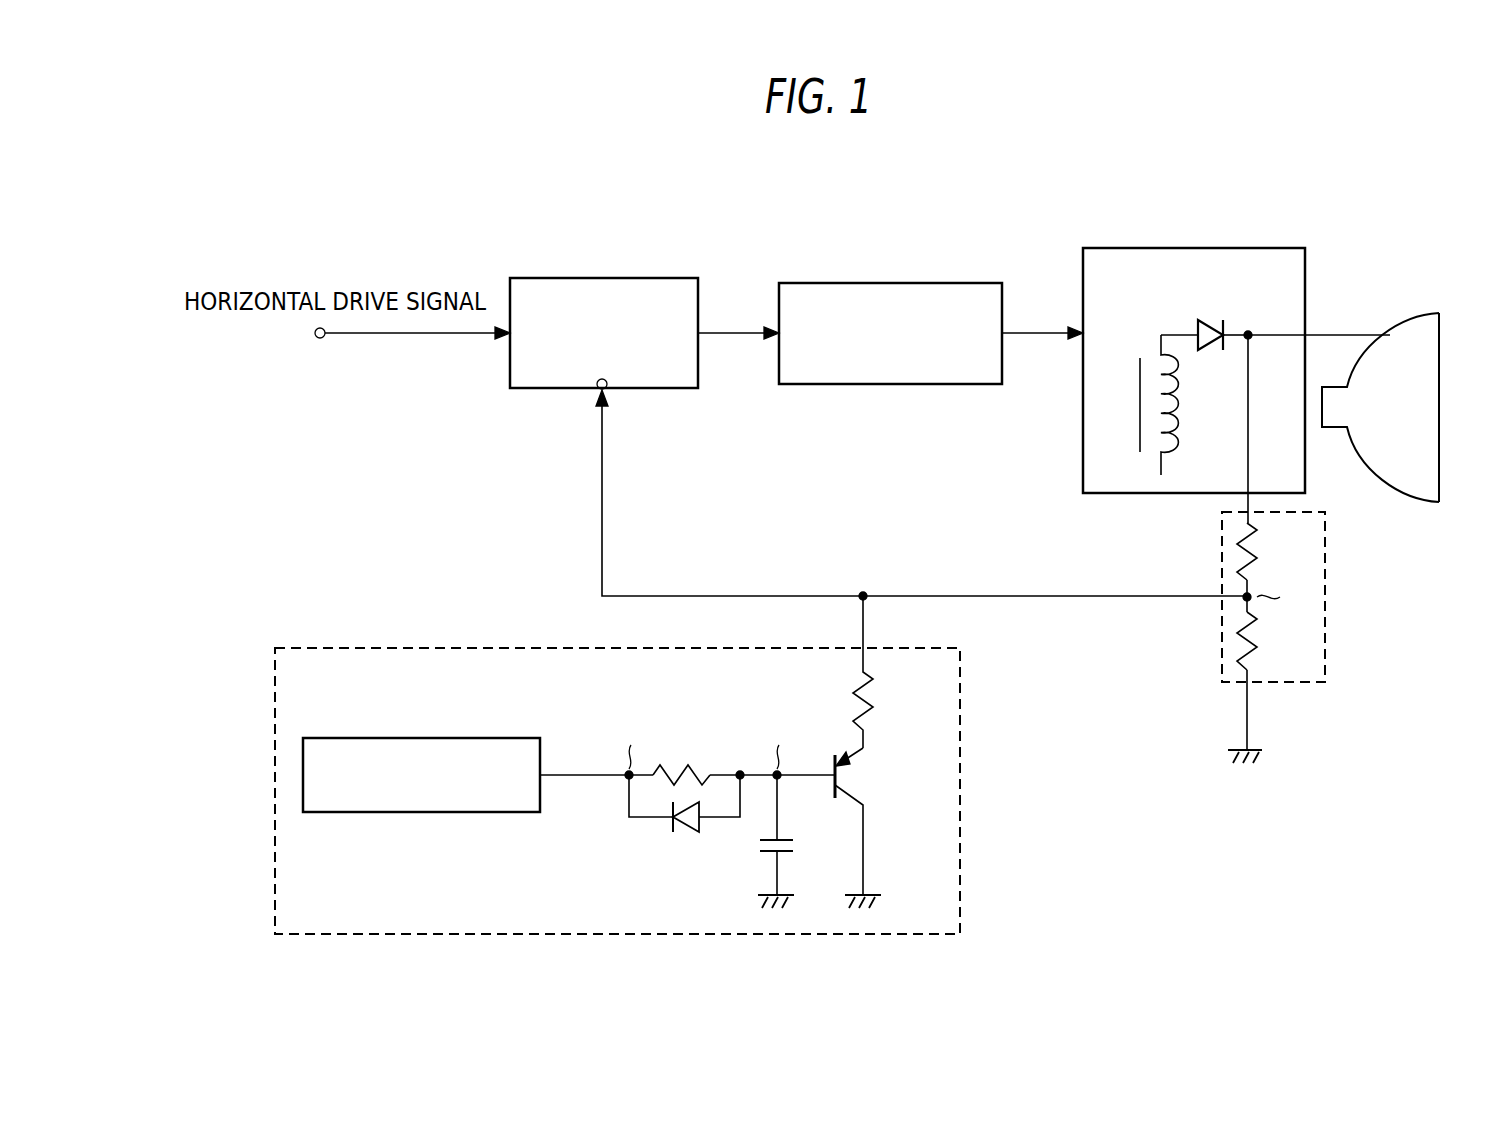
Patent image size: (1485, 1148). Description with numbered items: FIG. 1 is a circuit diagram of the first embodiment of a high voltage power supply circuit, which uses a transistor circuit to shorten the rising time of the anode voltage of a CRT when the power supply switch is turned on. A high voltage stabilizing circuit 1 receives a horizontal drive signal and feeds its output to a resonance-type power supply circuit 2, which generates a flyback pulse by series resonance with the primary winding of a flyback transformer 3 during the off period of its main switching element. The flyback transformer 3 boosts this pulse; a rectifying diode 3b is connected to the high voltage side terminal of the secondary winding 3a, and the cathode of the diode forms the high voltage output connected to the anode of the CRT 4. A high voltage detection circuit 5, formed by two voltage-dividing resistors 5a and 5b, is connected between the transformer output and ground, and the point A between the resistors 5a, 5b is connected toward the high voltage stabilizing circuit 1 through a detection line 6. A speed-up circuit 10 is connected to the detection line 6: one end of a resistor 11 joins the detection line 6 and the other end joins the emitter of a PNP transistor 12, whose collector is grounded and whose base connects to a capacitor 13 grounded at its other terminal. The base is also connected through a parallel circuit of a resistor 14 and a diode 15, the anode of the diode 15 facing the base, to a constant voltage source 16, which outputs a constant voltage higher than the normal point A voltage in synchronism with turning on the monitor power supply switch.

The high voltage stabilizing circuit 1 is at (602, 277).
The resonance-type power supply circuit 2 is at (889, 282).
The flyback transformer 3 is at (1192, 247).
The secondary winding 3a is at (1140, 397).
The rectifying diode 3b is at (1209, 319).
The CRT 4 is at (1421, 314).
The high voltage detection circuit 5 is at (1221, 554).
The voltage-dividing resistor 5a is at (1258, 552).
The voltage-dividing resistor 5b is at (1258, 640).
The detection line 6 is at (710, 594).
The speed-up circuit 10 is at (961, 748).
The resistor 11 is at (870, 701).
The PNP transistor 12 is at (866, 776).
The capacitor 13 is at (757, 850).
The resistor 14 is at (693, 766).
The diode 15 is at (670, 825).
The constant voltage source 16 is at (420, 737).